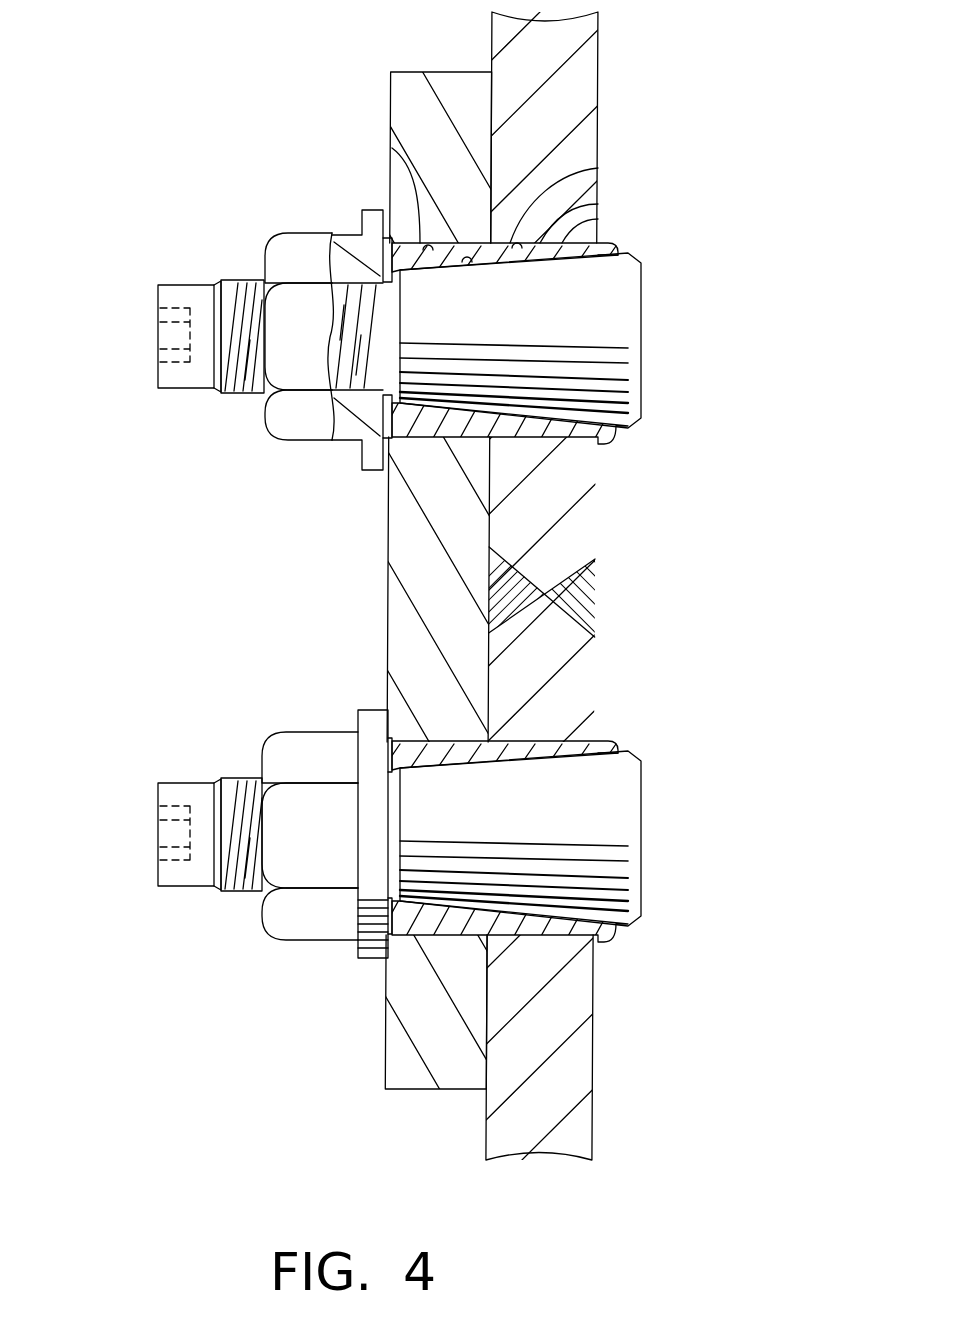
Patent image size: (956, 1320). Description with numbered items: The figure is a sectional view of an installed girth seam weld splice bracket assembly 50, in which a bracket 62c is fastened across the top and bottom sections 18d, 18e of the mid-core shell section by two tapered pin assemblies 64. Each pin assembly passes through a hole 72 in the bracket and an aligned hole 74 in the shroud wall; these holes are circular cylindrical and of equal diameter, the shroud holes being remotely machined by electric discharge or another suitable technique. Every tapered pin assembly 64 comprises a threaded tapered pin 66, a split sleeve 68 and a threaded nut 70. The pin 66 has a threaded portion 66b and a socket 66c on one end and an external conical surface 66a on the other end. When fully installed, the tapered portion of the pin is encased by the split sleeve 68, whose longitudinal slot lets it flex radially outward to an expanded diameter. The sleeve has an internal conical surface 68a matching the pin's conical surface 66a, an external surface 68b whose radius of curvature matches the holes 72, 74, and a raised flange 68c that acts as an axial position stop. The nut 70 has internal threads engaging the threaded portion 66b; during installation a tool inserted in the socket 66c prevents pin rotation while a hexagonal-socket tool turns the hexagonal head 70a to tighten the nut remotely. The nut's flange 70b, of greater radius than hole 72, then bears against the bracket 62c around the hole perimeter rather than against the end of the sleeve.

The joint assembly 50 is at (478, 635).
The bracket 62c is at (392, 95).
The top section of the mid-core shell section 18d is at (585, 63).
The bottom section of the mid-core shell section 18e is at (573, 1000).
The tapered pin assembly 64 is at (386, 318).
The threaded tapered pin 66 is at (406, 340).
The external conical surface 66a is at (478, 262).
The threaded portion 66b is at (402, 312).
The socket 66c is at (172, 334).
The split sleeve 68 is at (520, 318).
The internal conical surface 68a is at (583, 258).
The external surface 68b is at (597, 244).
The raised flange 68c is at (605, 445).
The threaded nut 70 is at (294, 323).
The hexagonal head 70a is at (300, 233).
The flange 70b is at (362, 210).
The hole in the bracket 72 is at (392, 150).
The hole in the shroud wall 74 is at (598, 172).